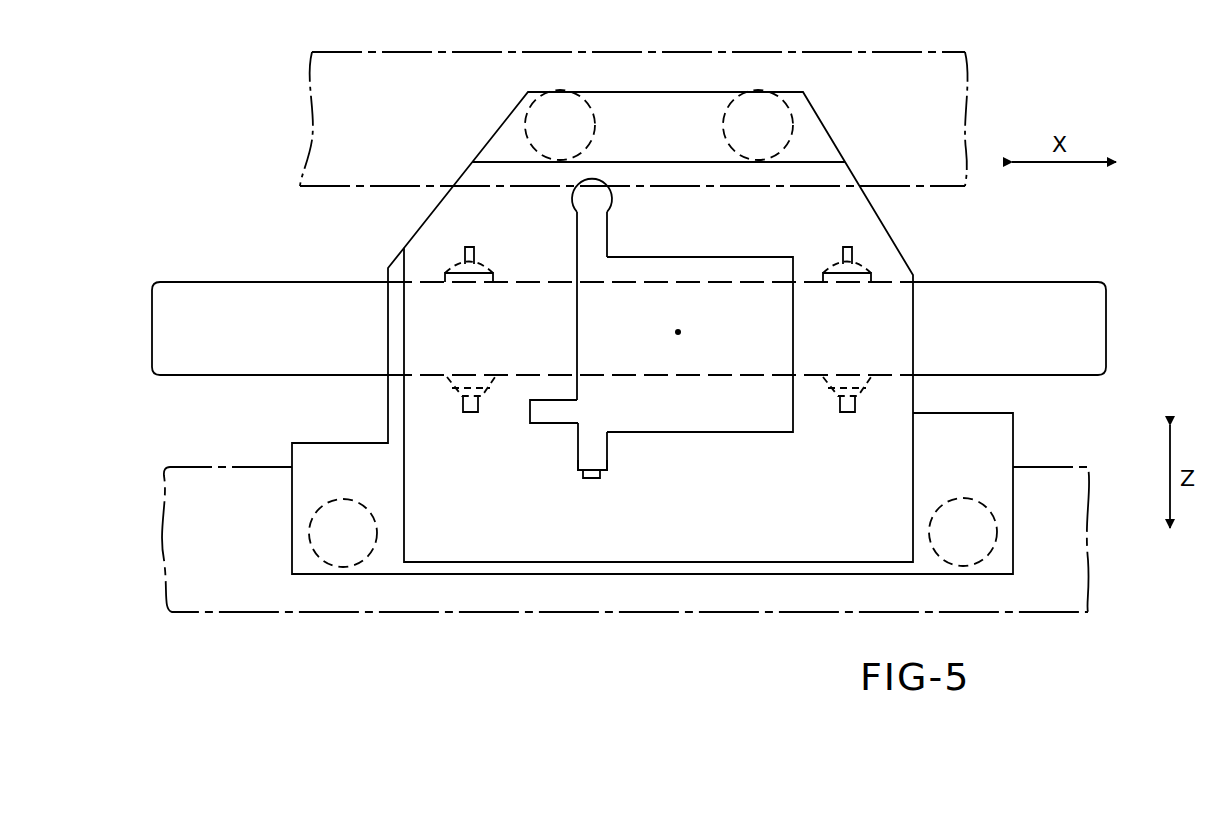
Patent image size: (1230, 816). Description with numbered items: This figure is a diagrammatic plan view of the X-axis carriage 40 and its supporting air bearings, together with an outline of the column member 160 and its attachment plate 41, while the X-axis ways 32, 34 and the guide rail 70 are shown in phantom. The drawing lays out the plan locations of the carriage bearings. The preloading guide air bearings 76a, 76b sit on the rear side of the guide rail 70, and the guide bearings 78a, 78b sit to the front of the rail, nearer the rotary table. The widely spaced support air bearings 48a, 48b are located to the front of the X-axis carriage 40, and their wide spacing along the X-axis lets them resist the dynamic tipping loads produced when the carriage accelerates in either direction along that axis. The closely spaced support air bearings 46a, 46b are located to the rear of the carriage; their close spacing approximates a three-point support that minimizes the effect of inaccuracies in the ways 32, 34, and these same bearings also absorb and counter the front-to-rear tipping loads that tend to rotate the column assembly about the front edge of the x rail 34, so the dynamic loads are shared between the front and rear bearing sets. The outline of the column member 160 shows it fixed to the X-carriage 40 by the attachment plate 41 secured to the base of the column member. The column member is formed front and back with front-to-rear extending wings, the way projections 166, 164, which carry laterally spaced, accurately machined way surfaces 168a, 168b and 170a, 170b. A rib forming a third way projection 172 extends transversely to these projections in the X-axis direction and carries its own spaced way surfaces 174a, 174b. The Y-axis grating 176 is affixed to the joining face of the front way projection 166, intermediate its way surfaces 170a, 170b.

The way 32 is at (312, 127).
The x rail 34 is at (186, 535).
The X-axis carriage 40 is at (504, 576).
The attachment plate 41 is at (739, 563).
The support air bearing 46a is at (526, 111).
The support air bearing 46b is at (792, 112).
The support air bearing 48a is at (360, 461).
The support air bearing 48b is at (953, 498).
The guide rail 70 is at (228, 247).
The preloading guide air bearing 76a is at (451, 269).
The preloading guide air bearing 76b is at (831, 267).
The guide air bearing 78a is at (446, 386).
The guide air bearing 78b is at (860, 400).
The column member 160 is at (727, 433).
The way projection 164 is at (576, 241).
The way projection 166 is at (571, 449).
The way surface 168a is at (576, 256).
The way surface 168b is at (608, 238).
The way surface 170a is at (576, 470).
The way surface 170b is at (611, 469).
The third way projection 172 is at (527, 410).
The way surface 174a is at (543, 398).
The way surface 174b is at (543, 428).
The Y-axis grating 176 is at (594, 481).